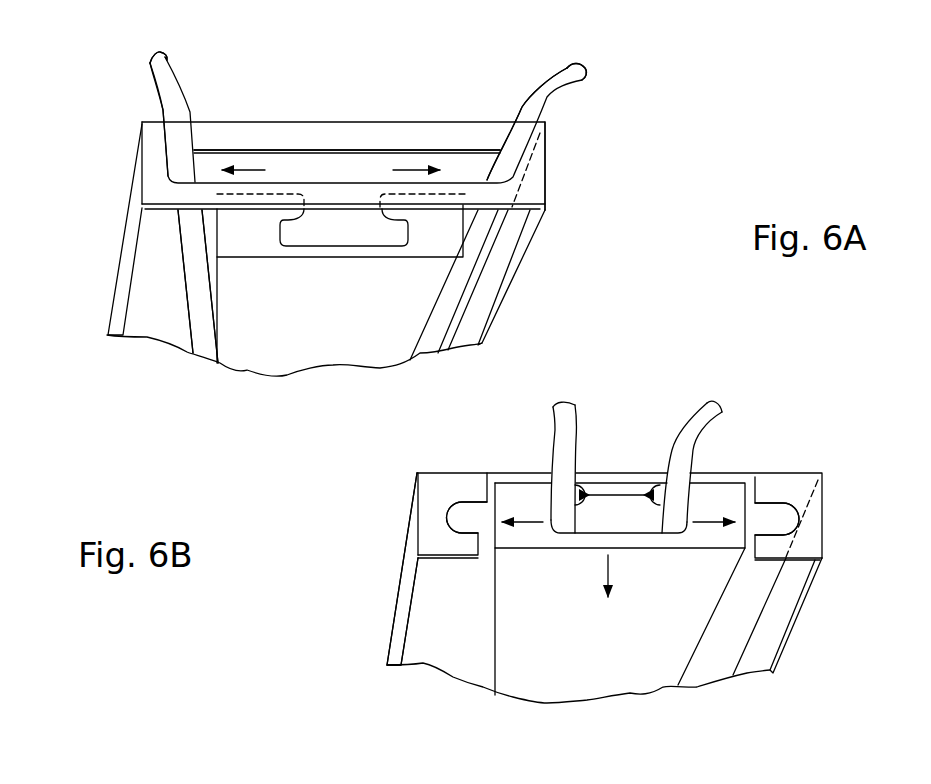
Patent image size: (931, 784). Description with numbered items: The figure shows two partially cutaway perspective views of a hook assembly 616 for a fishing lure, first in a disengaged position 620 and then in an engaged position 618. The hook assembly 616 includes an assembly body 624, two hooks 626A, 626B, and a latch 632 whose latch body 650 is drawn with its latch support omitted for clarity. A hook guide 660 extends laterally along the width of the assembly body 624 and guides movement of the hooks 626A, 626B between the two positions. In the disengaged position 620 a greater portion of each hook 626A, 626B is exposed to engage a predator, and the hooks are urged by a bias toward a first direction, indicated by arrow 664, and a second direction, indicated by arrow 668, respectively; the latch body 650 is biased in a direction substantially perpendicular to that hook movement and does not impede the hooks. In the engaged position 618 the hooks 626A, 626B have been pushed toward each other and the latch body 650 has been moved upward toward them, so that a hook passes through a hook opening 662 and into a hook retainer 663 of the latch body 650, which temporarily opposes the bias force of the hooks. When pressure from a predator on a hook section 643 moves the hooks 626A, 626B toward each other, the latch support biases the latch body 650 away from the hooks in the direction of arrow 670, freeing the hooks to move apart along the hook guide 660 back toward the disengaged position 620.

In FIG. 6A, the hook assembly 616 is at (107, 169).
In FIG. 6B, the hook assembly 616 is at (350, 518).
In FIG. 6B, the engaged position 618 is at (531, 414).
In FIG. 6A, the disengaged position 620 is at (216, 82).
In FIG. 6A, the assembly body 624 is at (540, 180).
In FIG. 6A, the hook 626A is at (553, 68).
In FIG. 6B, the hook 626A is at (680, 418).
In FIG. 6A, the hook 626B is at (160, 86).
In FIG. 6B, the hook 626B is at (583, 432).
In FIG. 6A, the latch 632 is at (301, 350).
In FIG. 6A, the hook section 643 is at (157, 56).
In FIG. 6B, the hook section 643 is at (577, 405).
In FIG. 6A, the latch body 650 is at (242, 332).
In FIG. 6B, the latch body 650 is at (510, 647).
In FIG. 6A, the hook guide 660 is at (374, 154).
In FIG. 6B, the hook guide 660 is at (462, 505).
In FIG. 6B, the hook opening 662 is at (620, 493).
In FIG. 6B, the hook retainer 663 is at (596, 524).
In FIG. 6A, the arrow indicating first direction 664 is at (423, 163).
In FIG. 6B, the arrow indicating first direction 664 is at (717, 520).
In FIG. 6A, the arrow indicating second direction 668 is at (265, 170).
In FIG. 6B, the arrow indicating second direction 668 is at (528, 522).
In FIG. 6B, the arrow indicating latch body bias direction 670 is at (612, 565).